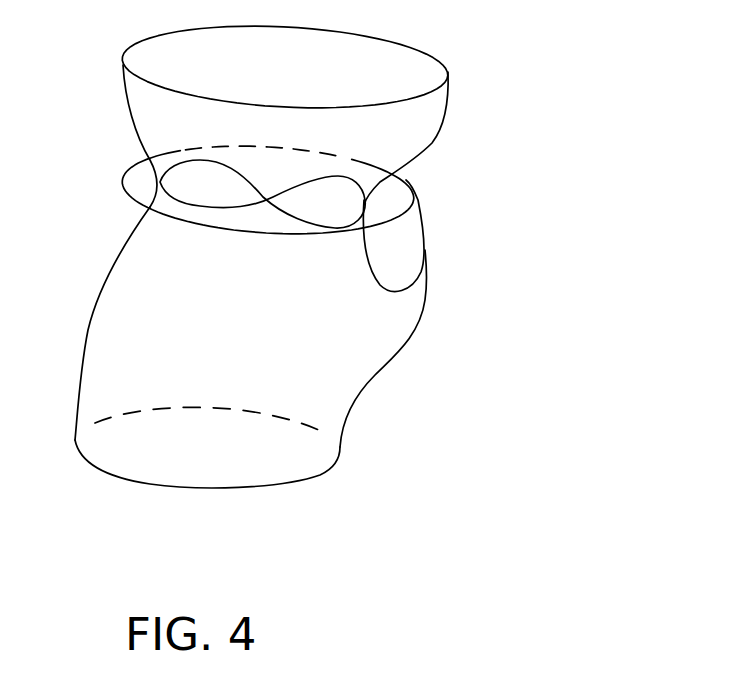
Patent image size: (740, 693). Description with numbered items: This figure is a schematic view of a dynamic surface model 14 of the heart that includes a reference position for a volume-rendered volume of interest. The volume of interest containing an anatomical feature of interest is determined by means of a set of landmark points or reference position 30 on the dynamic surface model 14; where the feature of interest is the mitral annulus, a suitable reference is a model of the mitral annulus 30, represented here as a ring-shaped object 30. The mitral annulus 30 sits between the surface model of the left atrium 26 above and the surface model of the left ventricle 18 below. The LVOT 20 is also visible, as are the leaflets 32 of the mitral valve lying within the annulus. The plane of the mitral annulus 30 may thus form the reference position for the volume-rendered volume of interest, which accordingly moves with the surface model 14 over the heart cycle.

The dynamic surface model 14 is at (525, 341).
The surface model of the left ventricle 18 is at (317, 387).
The LVOT 20 is at (400, 250).
The surface model of the left atrium 26 is at (388, 130).
The mitral annulus 30 is at (410, 200).
The leaflets of the mitral valve 32 is at (197, 177).